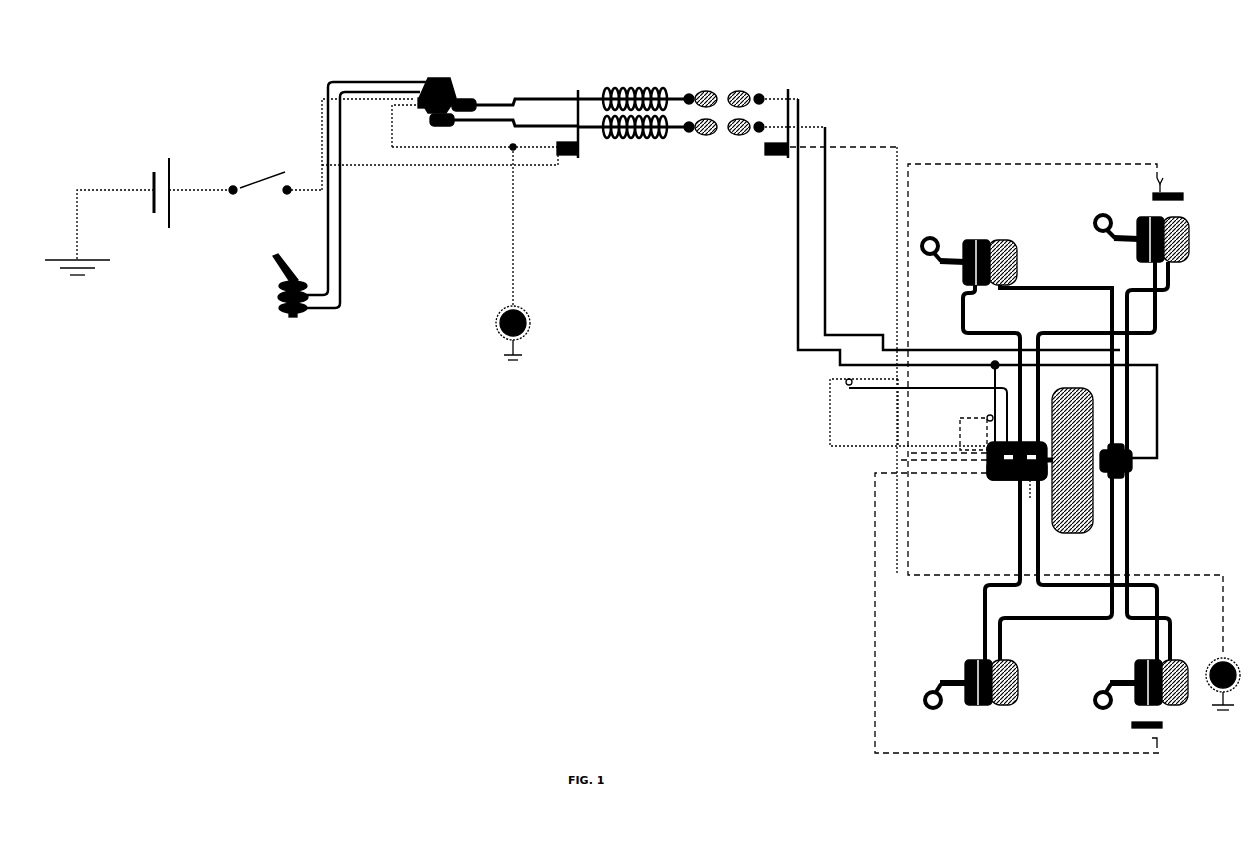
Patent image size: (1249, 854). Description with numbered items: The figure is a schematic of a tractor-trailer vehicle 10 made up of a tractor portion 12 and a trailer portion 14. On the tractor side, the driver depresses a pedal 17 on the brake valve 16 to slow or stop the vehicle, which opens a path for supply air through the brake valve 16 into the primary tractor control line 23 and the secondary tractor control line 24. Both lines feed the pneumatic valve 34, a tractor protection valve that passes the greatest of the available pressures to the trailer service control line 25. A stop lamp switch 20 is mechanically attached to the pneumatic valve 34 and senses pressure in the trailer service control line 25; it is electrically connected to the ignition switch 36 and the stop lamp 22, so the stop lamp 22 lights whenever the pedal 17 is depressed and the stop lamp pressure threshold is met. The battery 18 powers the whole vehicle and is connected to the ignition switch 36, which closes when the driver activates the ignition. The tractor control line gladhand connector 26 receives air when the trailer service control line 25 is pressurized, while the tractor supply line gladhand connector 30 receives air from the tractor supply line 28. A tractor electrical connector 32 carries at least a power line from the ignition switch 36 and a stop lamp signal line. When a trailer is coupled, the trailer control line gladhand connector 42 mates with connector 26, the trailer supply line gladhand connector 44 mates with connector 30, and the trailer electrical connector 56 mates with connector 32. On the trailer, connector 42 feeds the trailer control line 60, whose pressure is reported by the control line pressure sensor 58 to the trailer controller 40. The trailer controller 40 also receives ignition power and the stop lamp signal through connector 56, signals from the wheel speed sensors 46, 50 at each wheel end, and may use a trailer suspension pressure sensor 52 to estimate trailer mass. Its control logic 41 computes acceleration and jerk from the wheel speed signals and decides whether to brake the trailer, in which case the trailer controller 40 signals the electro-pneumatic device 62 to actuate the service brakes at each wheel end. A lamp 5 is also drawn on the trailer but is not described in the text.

The indicator lamp 5 is at (1232, 664).
The vehicle 10 is at (700, 43).
The tractor portion 12 is at (363, 174).
The trailer portion 14 is at (942, 92).
The brake valve 16 is at (283, 307).
The pedal 17 is at (278, 258).
The battery 18 is at (170, 158).
The stop lamp switch 20 is at (428, 100).
The stop lamp 22 is at (520, 310).
The primary tractor control line 23 is at (365, 82).
The secondary tractor control line 24 is at (342, 212).
The trailer service control line 25 is at (525, 97).
The tractor control line gladhand connector 26 is at (537, 125).
The tractor supply line 28 is at (705, 94).
The tractor supply line gladhand connector 30 is at (266, 168).
The electrical connector 32 is at (570, 156).
The pneumatic valve 34 is at (450, 88).
The ignition switch 36 is at (707, 132).
The trailer controller 40 is at (1028, 442).
The control logic 41 is at (1005, 480).
The trailer control line gladhand connector 42 is at (750, 95).
The trailer supply line gladhand connector 44 is at (745, 131).
The wheel speed sensor 46 is at (1165, 180).
The wheel speed sensor 50 is at (798, 250).
The trailer suspension pressure sensor 52 is at (849, 390).
The electrical connector 56 is at (770, 156).
The control line pressure sensor 58 is at (828, 128).
The trailer control line 60 is at (1152, 733).
The electro-pneumatic device 62 is at (1031, 496).